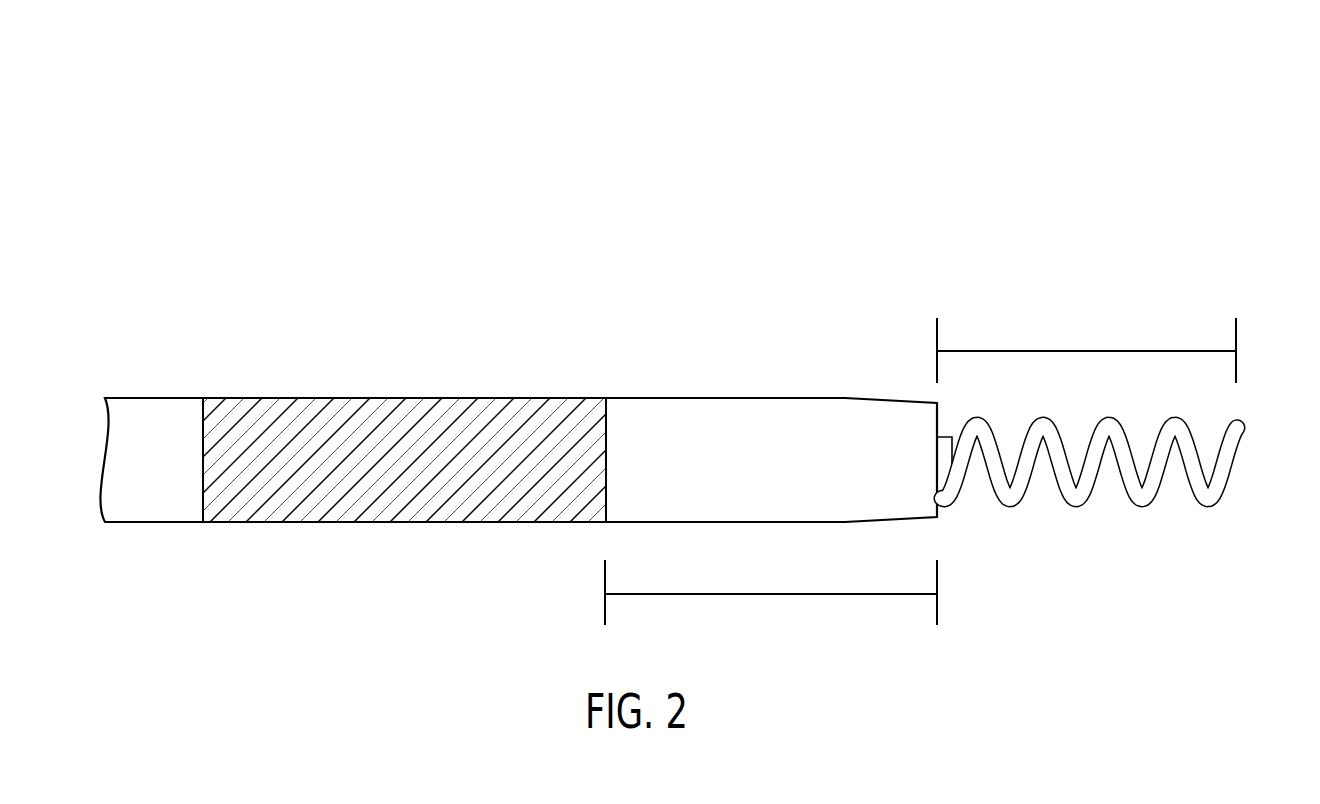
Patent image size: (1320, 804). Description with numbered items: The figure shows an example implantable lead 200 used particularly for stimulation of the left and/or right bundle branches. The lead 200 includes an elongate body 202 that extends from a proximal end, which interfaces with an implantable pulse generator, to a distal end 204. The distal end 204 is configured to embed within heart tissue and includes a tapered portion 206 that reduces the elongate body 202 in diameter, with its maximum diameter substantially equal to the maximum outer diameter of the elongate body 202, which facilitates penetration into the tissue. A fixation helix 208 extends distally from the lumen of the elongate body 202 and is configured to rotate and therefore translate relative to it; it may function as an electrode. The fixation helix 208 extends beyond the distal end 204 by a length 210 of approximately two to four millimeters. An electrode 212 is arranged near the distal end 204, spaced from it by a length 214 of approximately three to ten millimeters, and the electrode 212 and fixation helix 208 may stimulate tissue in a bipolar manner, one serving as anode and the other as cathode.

The implantable lead 200 is at (79, 160).
The elongate body 202 is at (157, 409).
The distal end 204 is at (811, 345).
The tapered portion 206 is at (875, 512).
The fixation helix 208 is at (1227, 478).
The length 210 is at (1097, 350).
The electrode 212 is at (347, 512).
The length 214 is at (712, 594).